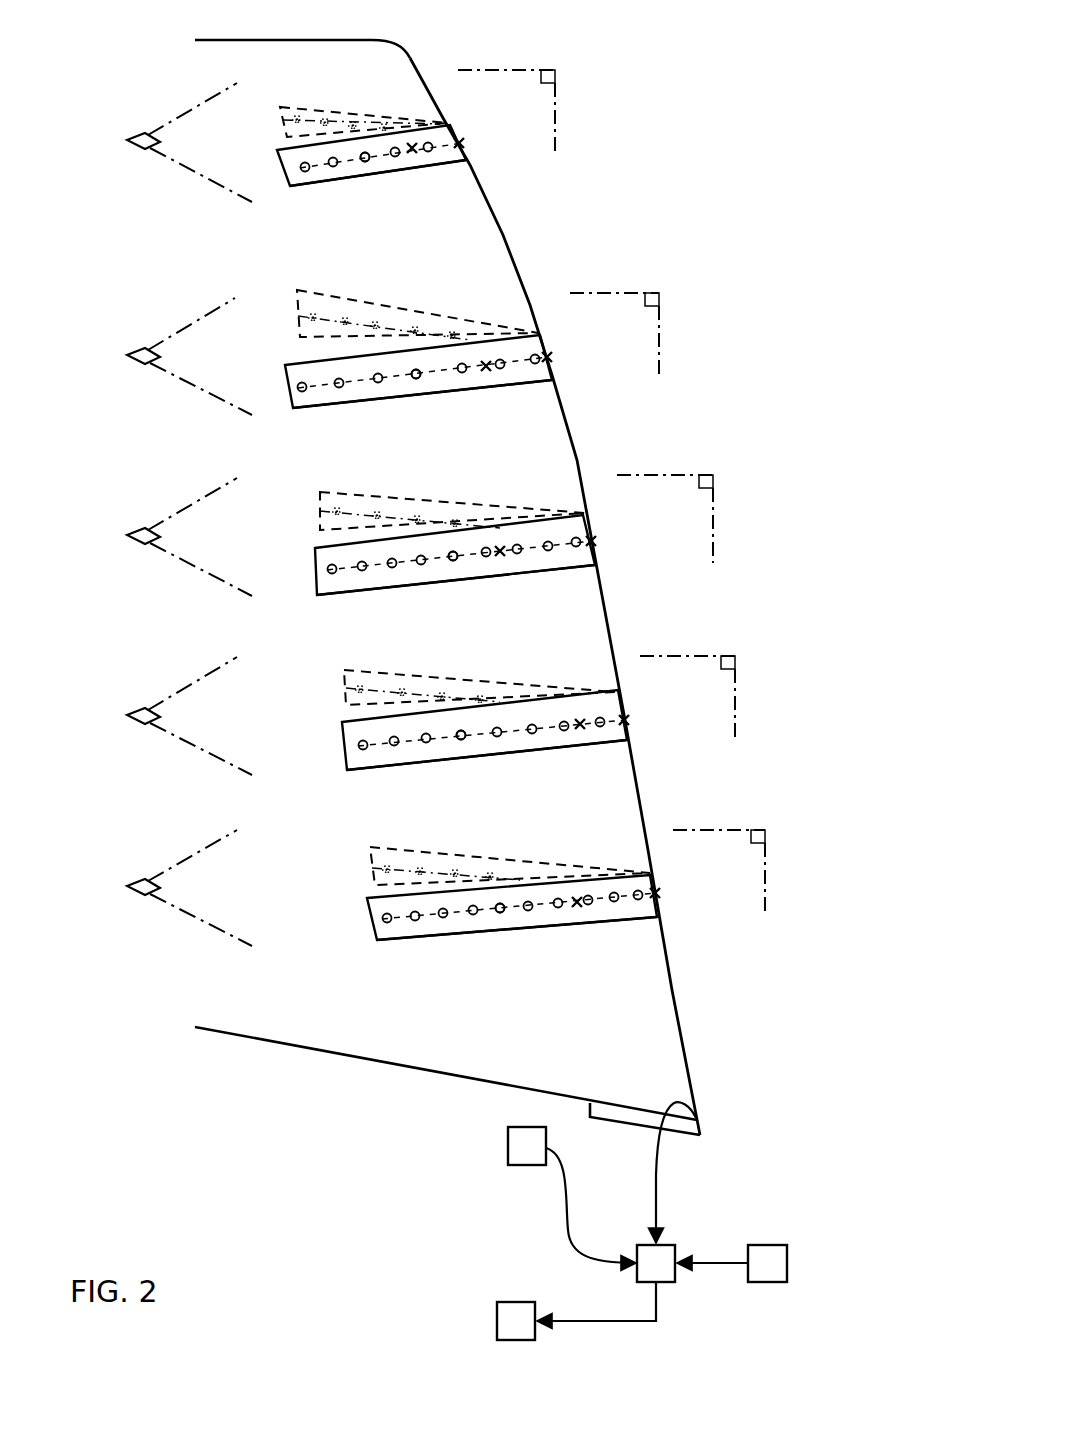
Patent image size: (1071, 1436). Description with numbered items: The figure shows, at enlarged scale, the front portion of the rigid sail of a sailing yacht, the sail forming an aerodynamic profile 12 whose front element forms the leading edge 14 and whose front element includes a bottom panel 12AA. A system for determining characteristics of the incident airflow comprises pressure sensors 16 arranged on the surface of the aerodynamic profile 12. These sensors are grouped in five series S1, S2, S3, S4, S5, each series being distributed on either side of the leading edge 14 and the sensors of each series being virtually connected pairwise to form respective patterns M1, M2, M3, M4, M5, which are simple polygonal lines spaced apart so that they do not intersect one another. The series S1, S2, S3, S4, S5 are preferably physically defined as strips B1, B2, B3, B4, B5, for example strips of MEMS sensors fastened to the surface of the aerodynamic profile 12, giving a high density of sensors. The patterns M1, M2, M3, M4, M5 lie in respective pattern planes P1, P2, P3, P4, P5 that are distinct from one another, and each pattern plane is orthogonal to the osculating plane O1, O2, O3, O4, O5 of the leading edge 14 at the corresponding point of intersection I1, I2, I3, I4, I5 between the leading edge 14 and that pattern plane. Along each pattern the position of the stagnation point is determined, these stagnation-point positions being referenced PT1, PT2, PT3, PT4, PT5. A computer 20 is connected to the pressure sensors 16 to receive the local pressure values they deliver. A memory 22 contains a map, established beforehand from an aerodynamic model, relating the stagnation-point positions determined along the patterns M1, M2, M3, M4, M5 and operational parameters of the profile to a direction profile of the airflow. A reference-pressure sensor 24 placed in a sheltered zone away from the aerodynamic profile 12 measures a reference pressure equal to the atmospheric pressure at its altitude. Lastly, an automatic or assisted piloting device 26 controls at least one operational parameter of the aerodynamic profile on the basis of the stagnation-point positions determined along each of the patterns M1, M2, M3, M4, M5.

The aerodynamic profile 12 is at (700, 1051).
The bottom panel 12AA is at (382, 82).
The leading edge 14 is at (514, 253).
The pressure sensors 16 is at (305, 172).
The computer 20 is at (665, 1243).
The memory 22 is at (787, 1263).
The reference-pressure sensor 24 is at (507, 1149).
The automatic or assisted piloting device 26 is at (496, 1320).
The pattern plane P1 is at (141, 140).
The pattern plane P2 is at (140, 352).
The pattern plane P3 is at (141, 533).
The pattern plane P4 is at (141, 713).
The pattern plane P5 is at (141, 884).
The osculating plane O1 is at (549, 72).
The osculating plane O2 is at (660, 298).
The osculating plane O3 is at (714, 479).
The osculating plane O4 is at (736, 660).
The osculating plane O5 is at (766, 834).
The point of intersection I1 is at (464, 141).
The point of intersection I2 is at (550, 358).
The point of intersection I3 is at (595, 541).
The point of intersection I4 is at (628, 720).
The point of intersection I5 is at (659, 893).
The series of pressure sensors S1 is at (279, 168).
The series of pressure sensors S2 is at (288, 397).
The series of pressure sensors S3 is at (314, 583).
The series of pressure sensors S4 is at (344, 759).
The series of pressure sensors S5 is at (369, 926).
The pattern M1 is at (359, 158).
The pattern M2 is at (412, 378).
The pattern M3 is at (447, 560).
The pattern M4 is at (478, 737).
The pattern M5 is at (497, 912).
The stagnation-point position PT1 is at (414, 154).
The stagnation-point position PT2 is at (488, 371).
The stagnation-point position PT3 is at (500, 556).
The stagnation-point position PT4 is at (581, 729).
The stagnation-point position PT5 is at (580, 906).
The strip B1 is at (444, 164).
The strip B2 is at (512, 392).
The strip B3 is at (560, 570).
The strip B4 is at (563, 753).
The strip B5 is at (620, 923).